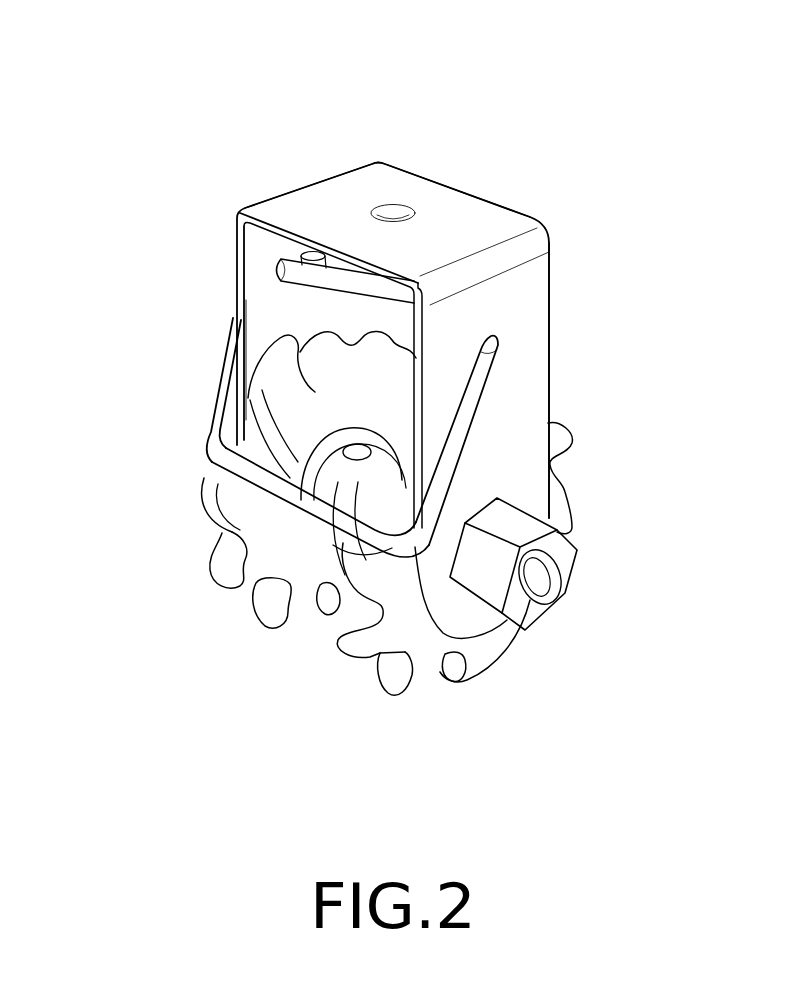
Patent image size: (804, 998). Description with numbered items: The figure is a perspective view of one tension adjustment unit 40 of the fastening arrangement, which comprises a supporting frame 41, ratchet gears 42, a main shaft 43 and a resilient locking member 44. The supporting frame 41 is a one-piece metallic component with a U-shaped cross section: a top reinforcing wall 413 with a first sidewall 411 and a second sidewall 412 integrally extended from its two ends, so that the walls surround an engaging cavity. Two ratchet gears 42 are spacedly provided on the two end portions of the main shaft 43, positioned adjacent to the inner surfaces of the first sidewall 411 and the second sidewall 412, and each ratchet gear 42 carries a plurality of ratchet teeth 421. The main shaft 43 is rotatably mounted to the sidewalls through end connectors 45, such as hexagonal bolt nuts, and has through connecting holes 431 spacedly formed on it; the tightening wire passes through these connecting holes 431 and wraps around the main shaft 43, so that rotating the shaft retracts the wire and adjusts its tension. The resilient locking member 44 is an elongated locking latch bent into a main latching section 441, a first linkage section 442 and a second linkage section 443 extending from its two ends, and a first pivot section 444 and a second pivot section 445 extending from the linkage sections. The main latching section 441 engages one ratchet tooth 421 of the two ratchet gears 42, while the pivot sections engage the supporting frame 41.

The tension adjustment unit 40 is at (619, 267).
The supporting frame 41 is at (305, 140).
The first sidewall 411 is at (540, 380).
The second sidewall 412 is at (265, 304).
The top reinforcing wall 413 is at (475, 213).
The ratchet gear 42 is at (275, 529).
The ratchet teeth 421 is at (359, 681).
The main shaft 43 is at (347, 490).
The connecting holes 431 is at (362, 425).
The resilient locking member 44 is at (208, 441).
The main latching section 441 is at (285, 425).
The first linkage section 442 is at (488, 426).
The second linkage section 443 is at (207, 392).
The first pivot section 444 is at (297, 302).
The second pivot section 445 is at (295, 237).
The end connectors 45 is at (523, 527).